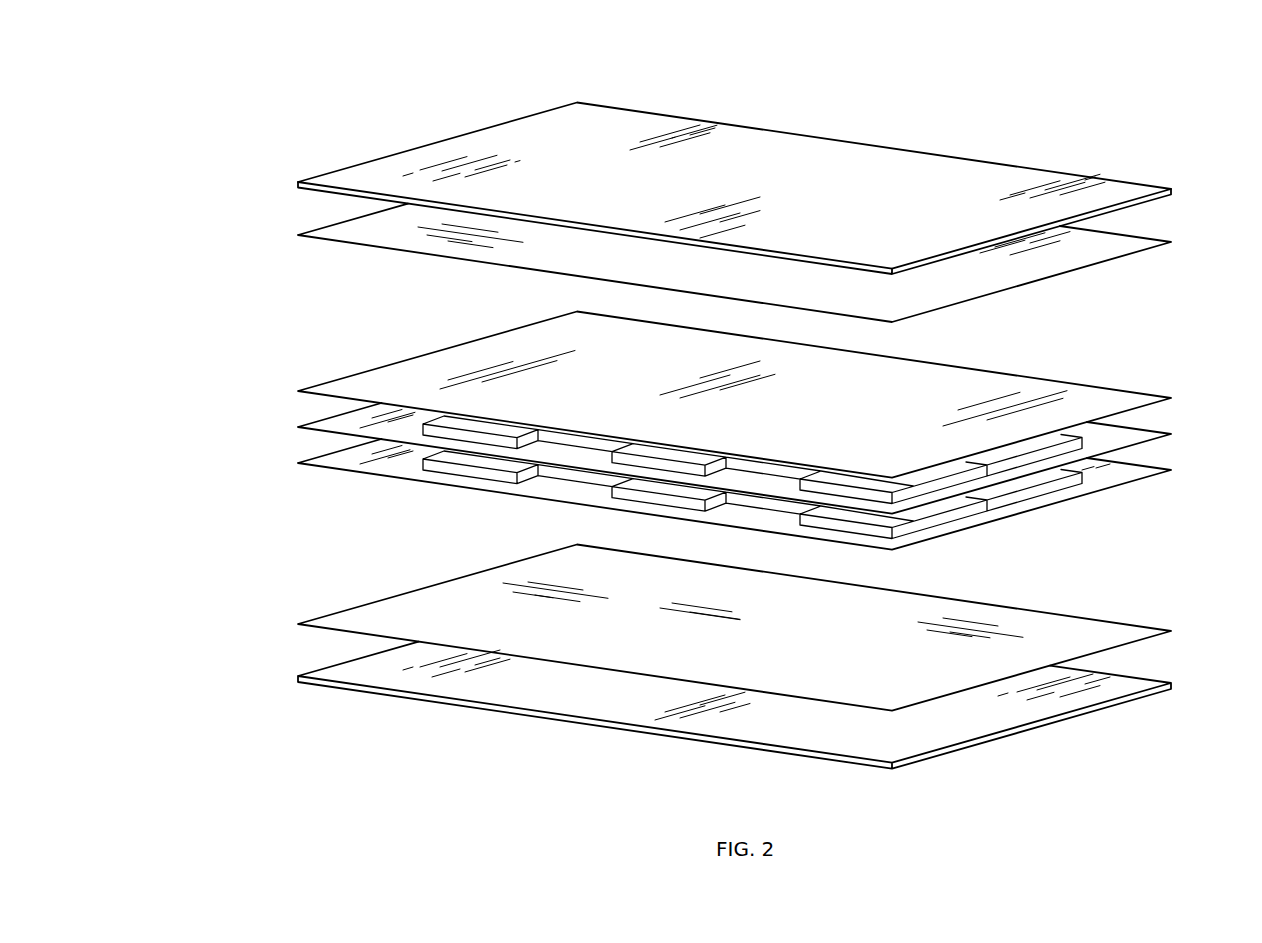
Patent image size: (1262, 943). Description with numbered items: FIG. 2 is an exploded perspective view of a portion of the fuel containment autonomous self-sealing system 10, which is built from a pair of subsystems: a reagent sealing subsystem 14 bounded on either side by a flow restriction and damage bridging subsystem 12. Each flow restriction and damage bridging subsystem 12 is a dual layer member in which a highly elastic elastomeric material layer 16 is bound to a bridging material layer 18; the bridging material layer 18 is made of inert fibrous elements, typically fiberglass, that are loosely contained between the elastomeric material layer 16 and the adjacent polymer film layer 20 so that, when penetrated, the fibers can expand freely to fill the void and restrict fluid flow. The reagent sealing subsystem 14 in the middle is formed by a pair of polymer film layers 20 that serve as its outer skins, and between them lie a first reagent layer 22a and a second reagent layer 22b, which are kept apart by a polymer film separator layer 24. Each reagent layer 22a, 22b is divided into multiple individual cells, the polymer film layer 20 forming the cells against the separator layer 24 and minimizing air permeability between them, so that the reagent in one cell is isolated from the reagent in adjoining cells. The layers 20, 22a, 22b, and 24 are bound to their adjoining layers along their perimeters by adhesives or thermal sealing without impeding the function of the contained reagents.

The fuel containment autonomous self-sealing system 10 is at (966, 92).
The flow restriction and damage bridging subsystem 12 is at (290, 208).
The reagent sealing subsystem 14 is at (290, 430).
The elastomeric material layer 16 is at (1070, 178).
The bridging material layer 18 is at (1131, 246).
The polymer film layer 20 is at (1100, 400).
The first reagent layer 22a is at (507, 440).
The second reagent layer 22b is at (457, 476).
The separator layer 24 is at (1176, 436).